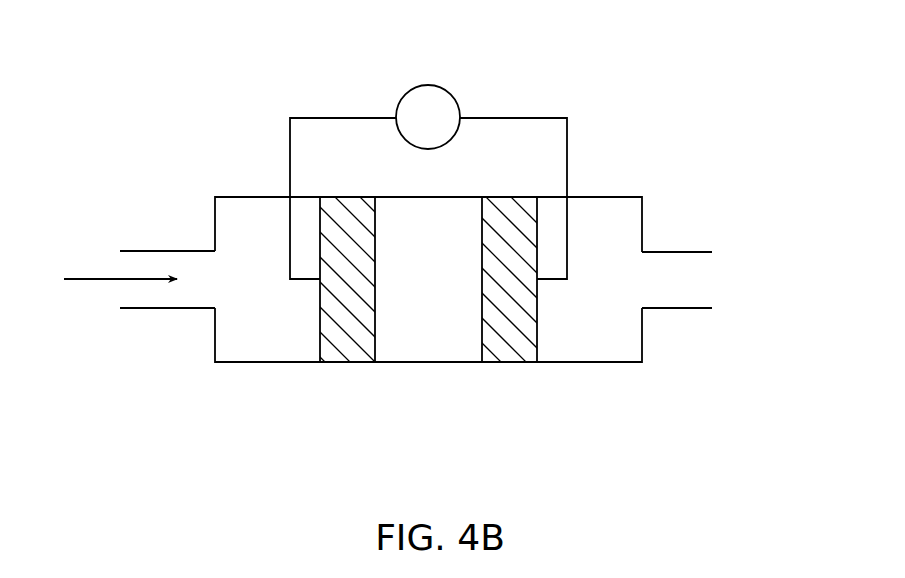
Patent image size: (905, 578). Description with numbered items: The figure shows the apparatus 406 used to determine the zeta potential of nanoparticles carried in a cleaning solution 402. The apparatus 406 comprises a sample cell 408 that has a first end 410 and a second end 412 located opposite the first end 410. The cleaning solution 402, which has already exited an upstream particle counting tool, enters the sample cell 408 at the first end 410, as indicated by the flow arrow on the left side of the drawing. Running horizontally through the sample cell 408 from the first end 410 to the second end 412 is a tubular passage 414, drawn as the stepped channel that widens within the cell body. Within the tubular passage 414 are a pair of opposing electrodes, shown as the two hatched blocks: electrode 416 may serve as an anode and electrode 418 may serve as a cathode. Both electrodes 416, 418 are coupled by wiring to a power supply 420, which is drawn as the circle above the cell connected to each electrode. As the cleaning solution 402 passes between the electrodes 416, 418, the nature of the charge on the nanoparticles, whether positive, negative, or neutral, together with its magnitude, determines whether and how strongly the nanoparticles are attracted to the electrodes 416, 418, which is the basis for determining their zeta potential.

The cleaning solution 402 is at (92, 279).
The apparatus 406 is at (689, 178).
The sample cell 408 is at (430, 373).
The first end 410 is at (190, 366).
The second end 412 is at (645, 383).
The tubular passage 414 is at (267, 348).
The electrode 416 is at (510, 362).
The electrode 418 is at (348, 362).
The power supply 420 is at (427, 85).